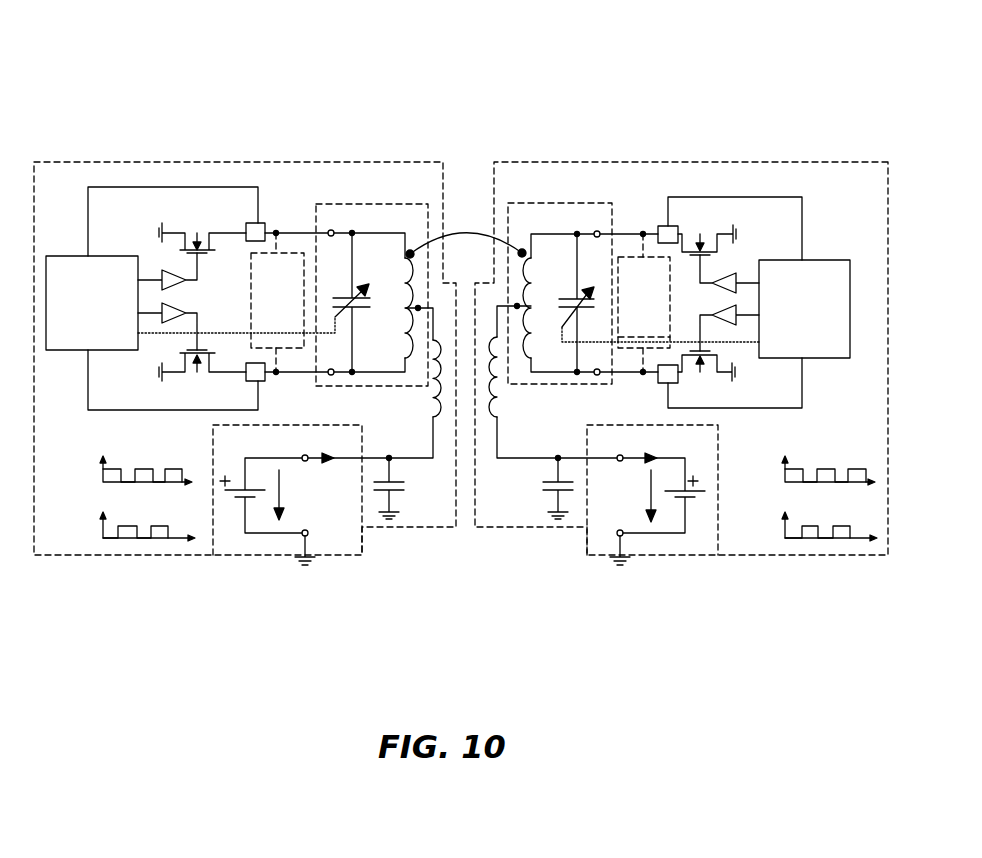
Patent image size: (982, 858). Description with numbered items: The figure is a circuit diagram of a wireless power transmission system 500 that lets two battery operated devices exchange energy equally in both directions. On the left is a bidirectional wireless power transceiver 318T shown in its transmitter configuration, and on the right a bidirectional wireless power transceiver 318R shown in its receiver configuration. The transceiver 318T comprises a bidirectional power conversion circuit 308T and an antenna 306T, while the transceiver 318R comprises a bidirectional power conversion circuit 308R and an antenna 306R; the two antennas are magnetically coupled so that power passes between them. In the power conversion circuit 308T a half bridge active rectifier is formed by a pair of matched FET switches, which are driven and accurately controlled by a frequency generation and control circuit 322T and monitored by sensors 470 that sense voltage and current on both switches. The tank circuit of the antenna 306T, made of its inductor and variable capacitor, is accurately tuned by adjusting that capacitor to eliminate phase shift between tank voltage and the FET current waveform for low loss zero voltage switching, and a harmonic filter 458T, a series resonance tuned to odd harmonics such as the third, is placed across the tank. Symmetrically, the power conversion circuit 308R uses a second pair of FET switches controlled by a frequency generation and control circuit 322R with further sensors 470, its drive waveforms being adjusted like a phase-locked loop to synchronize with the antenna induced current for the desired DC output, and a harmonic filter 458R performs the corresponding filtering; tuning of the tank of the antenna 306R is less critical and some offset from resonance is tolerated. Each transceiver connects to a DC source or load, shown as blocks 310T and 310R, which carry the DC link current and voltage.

The wireless power transmission system 500 is at (438, 44).
The bidirectional wireless power transceiver 318T is at (191, 101).
The bidirectional wireless power transceiver 318R is at (653, 101).
The bidirectional power conversion circuit 308T is at (213, 162).
The bidirectional power conversion circuit 308R is at (638, 162).
The antenna 306T is at (363, 204).
The antenna 306R is at (524, 203).
The frequency generation and control circuit 322T is at (96, 256).
The frequency generation and control circuit 322R is at (802, 260).
The sensors 470 is at (262, 224).
The harmonic filter 458T is at (297, 349).
The harmonic filter 458R is at (622, 350).
The transmitter DC power source 310T is at (225, 492).
The receiver DC load 310R is at (699, 492).